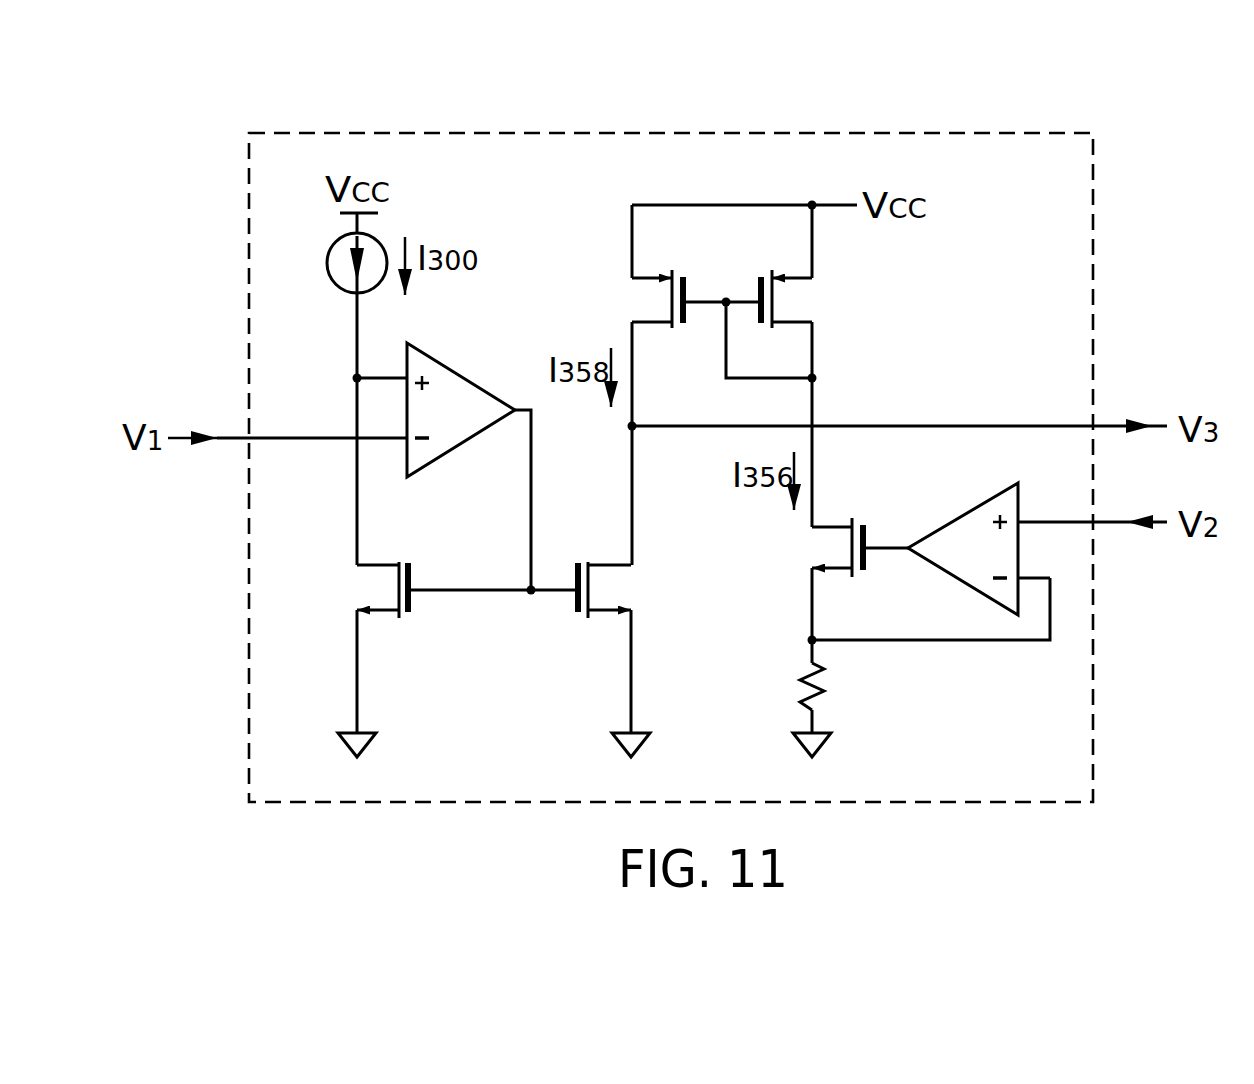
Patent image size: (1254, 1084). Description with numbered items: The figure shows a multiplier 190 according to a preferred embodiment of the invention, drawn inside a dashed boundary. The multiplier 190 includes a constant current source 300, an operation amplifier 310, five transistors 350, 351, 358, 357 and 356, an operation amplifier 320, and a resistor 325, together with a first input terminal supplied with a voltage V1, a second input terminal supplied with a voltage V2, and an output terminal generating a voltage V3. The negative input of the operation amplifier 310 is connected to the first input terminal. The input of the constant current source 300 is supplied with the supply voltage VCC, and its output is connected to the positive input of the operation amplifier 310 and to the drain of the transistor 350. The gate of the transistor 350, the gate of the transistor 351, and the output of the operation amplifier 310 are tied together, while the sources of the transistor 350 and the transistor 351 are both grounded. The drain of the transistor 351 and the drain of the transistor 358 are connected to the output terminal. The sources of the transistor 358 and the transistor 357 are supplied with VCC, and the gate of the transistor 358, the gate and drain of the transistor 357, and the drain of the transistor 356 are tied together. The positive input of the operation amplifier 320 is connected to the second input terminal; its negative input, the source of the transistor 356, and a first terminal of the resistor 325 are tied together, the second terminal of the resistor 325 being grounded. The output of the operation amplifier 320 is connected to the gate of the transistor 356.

The multiplier 190 is at (1093, 202).
The constant current source 300 is at (330, 290).
The operation amplifier 310 is at (448, 457).
The operation amplifier 320 is at (937, 521).
The resistor 325 is at (830, 690).
The transistor 350 is at (402, 625).
The transistor 351 is at (630, 600).
The transistor 356 is at (815, 546).
The transistor 357 is at (815, 298).
The transistor 358 is at (640, 295).